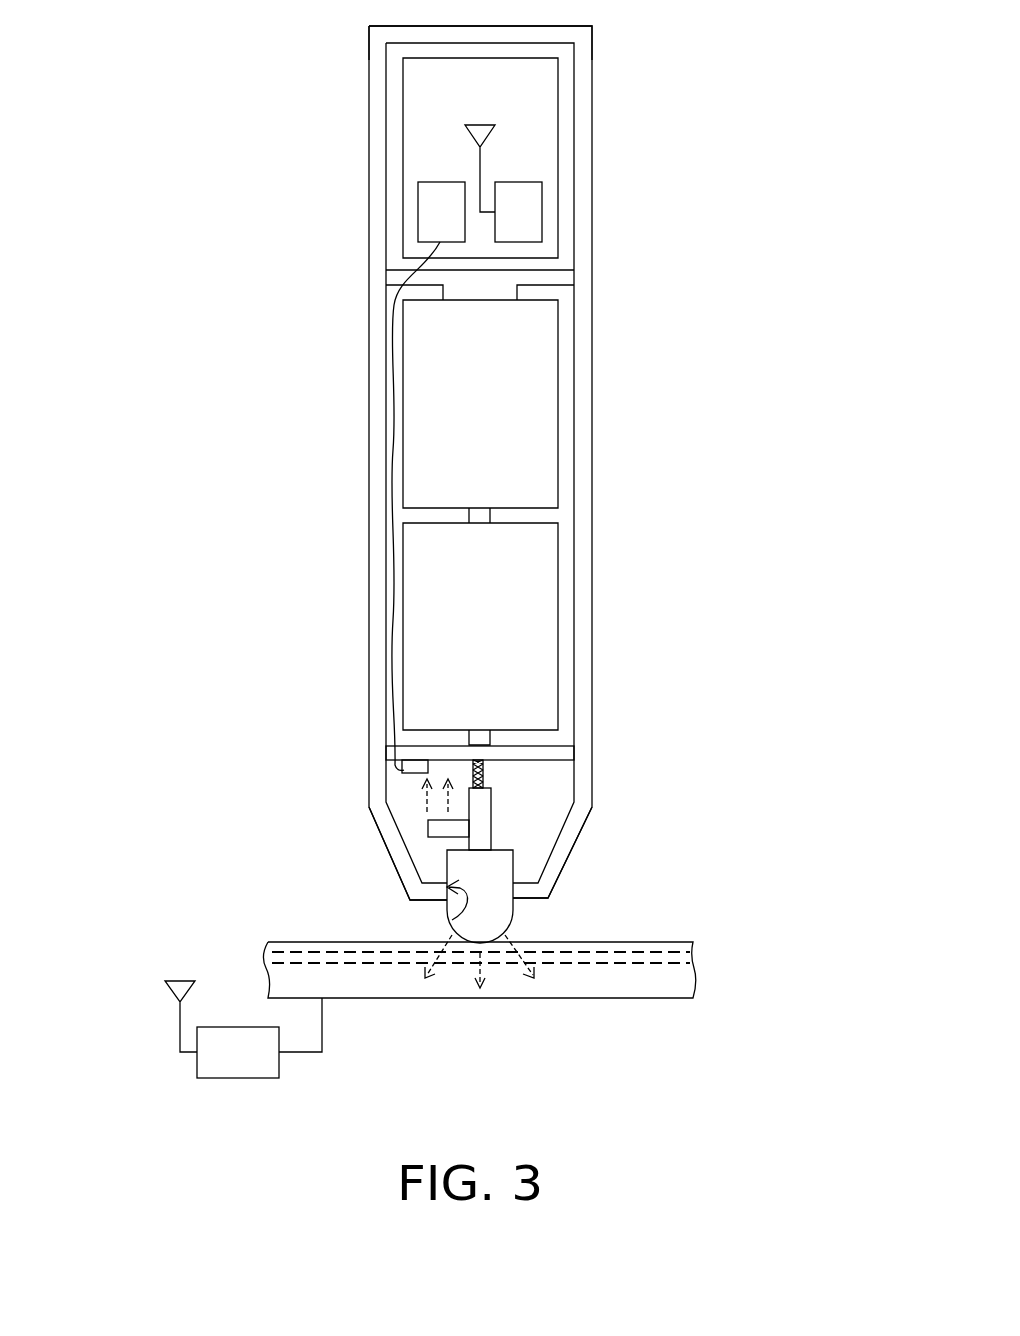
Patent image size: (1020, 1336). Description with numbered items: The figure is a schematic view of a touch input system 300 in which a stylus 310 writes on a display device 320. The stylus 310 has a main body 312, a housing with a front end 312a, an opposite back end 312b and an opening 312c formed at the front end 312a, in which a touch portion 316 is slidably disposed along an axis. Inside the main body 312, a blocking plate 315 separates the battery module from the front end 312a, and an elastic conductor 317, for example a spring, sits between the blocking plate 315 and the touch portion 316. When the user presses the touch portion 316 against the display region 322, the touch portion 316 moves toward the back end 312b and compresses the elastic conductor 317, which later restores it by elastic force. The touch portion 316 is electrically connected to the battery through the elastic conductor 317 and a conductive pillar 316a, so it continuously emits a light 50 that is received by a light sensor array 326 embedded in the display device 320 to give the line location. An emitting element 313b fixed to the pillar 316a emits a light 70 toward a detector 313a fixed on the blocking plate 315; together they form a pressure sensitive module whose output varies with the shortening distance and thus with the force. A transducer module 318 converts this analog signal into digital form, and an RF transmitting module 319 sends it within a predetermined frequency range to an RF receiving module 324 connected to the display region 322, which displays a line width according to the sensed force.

The touch input system 300 is at (788, 1103).
The stylus 310 is at (330, 402).
The main body 312 is at (583, 410).
The front end 312a is at (587, 877).
The back end 312b is at (617, 44).
The opening 312c is at (452, 920).
The detector 313a is at (405, 773).
The emitting element 313b is at (440, 834).
The blocking plate 315 is at (401, 753).
The touch portion 316 is at (497, 920).
The conductive pillar 316a is at (483, 835).
The elastic conductor 317 is at (483, 778).
The transducer module 318 is at (437, 215).
The RF transmitting module 319 is at (520, 215).
The light 70 is at (420, 797).
The light 50 is at (478, 970).
The display device 320 is at (214, 963).
The display region 322 is at (665, 977).
The RF receiving module 324 is at (222, 1065).
The light sensor array 326 is at (557, 963).